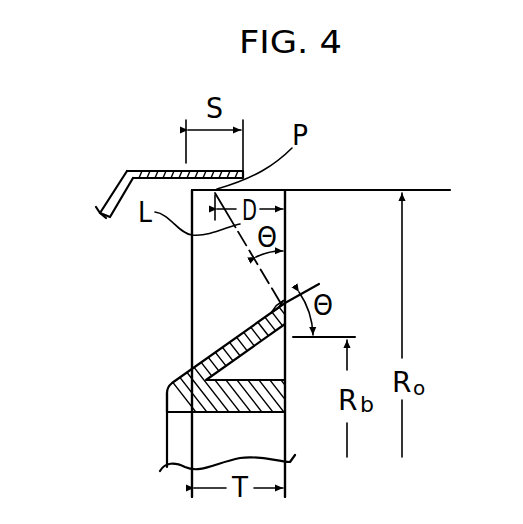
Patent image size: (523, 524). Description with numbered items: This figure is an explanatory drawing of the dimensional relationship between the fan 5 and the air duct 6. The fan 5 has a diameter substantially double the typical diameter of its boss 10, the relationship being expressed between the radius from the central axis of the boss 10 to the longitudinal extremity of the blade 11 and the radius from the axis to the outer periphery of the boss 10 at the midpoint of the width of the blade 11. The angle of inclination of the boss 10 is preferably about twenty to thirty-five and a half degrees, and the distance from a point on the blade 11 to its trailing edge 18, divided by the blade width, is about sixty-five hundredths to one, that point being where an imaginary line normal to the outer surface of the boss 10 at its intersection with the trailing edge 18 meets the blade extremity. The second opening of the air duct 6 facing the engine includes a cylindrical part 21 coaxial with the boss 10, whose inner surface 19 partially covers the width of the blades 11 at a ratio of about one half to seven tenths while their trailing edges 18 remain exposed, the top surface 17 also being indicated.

The fan 5 is at (298, 439).
The air duct 6 is at (106, 196).
The boss 10 is at (205, 352).
The blade 11 is at (198, 263).
The top surface 17 is at (223, 189).
The trailing edge 18 is at (287, 221).
The inner surface 19 is at (192, 301).
The cylindrical part 21 is at (160, 170).